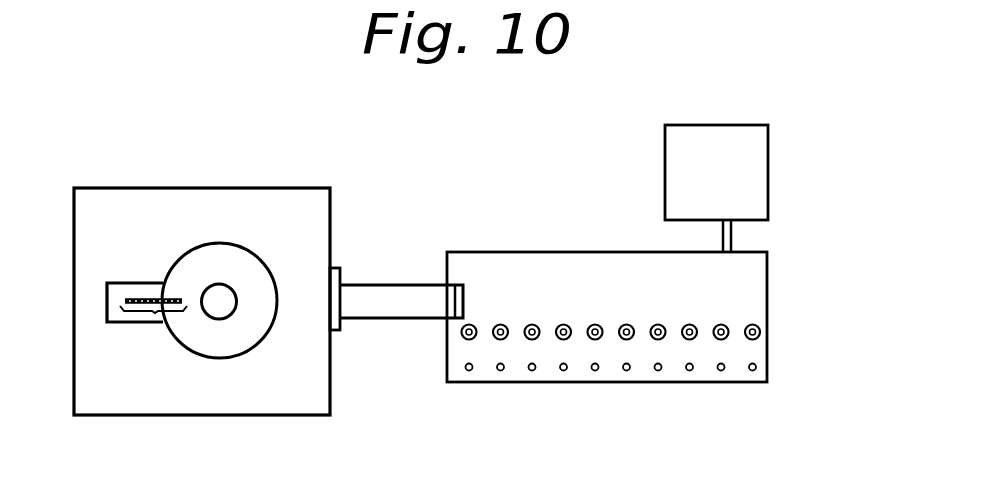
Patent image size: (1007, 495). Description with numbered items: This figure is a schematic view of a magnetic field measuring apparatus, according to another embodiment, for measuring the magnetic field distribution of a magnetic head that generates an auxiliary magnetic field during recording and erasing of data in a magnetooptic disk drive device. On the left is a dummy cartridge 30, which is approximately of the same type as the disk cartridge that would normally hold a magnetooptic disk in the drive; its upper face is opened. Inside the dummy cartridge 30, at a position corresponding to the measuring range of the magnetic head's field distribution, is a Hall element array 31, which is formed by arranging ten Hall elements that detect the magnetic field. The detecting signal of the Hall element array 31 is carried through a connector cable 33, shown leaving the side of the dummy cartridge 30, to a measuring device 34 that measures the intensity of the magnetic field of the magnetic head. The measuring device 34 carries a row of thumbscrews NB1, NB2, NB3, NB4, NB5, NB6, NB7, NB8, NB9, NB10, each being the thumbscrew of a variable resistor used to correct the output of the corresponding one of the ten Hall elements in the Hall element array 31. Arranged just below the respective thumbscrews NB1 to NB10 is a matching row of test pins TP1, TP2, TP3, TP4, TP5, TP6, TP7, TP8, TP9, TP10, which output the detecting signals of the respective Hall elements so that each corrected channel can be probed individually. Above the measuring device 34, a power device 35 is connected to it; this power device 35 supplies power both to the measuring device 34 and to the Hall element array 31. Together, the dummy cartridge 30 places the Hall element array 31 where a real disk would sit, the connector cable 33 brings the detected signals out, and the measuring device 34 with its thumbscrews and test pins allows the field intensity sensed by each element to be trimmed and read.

The dummy cartridge 30 is at (247, 188).
The Hall element array 31 is at (158, 313).
The connector cable 33 is at (335, 268).
The measuring device 34 is at (553, 252).
The power device 35 is at (713, 125).
The thumbscrew NB1 is at (461, 332).
The thumbscrew NB2 is at (496, 325).
The thumbscrew NB3 is at (531, 324).
The thumbscrew NB4 is at (564, 324).
The thumbscrew NB5 is at (596, 324).
The thumbscrew NB6 is at (628, 324).
The thumbscrew NB7 is at (659, 324).
The thumbscrew NB8 is at (692, 324).
The thumbscrew NB9 is at (728, 326).
The thumbscrew NB10 is at (761, 332).
The test pin TP1 is at (469, 370).
The test pin TP2 is at (500, 370).
The test pin TP3 is at (532, 370).
The test pin TP4 is at (564, 370).
The test pin TP5 is at (595, 370).
The test pin TP6 is at (627, 370).
The test pin TP7 is at (659, 370).
The test pin TP8 is at (691, 370).
The test pin TP9 is at (723, 370).
The test pin TP10 is at (756, 367).